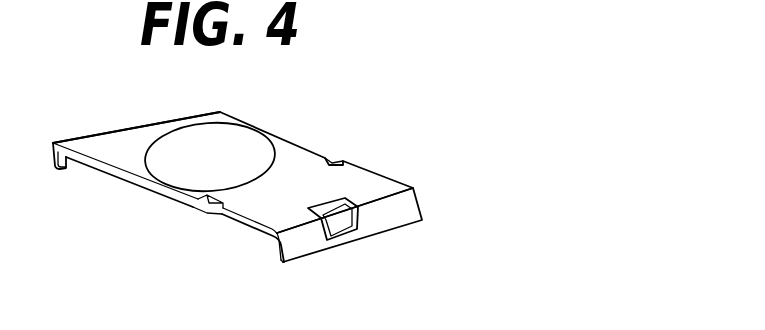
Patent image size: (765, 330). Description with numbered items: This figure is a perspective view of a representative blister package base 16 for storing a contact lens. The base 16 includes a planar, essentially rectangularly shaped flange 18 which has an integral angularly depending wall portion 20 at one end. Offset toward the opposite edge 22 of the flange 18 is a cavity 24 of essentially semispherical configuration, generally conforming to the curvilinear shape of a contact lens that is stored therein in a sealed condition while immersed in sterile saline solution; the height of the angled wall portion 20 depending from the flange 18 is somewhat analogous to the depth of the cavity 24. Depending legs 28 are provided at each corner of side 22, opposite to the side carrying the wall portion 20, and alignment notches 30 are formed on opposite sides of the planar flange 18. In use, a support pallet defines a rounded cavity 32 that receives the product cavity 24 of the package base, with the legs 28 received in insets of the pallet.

The blister package base 16 is at (312, 122).
The flange 18 is at (327, 192).
The angularly depending wall portion 20 is at (313, 255).
The opposite edge 22 is at (145, 125).
The cavity 24 is at (208, 163).
The depending legs 28 is at (55, 167).
The alignment notches 30 is at (346, 158).
The rounded cavity 32 is at (172, 201).